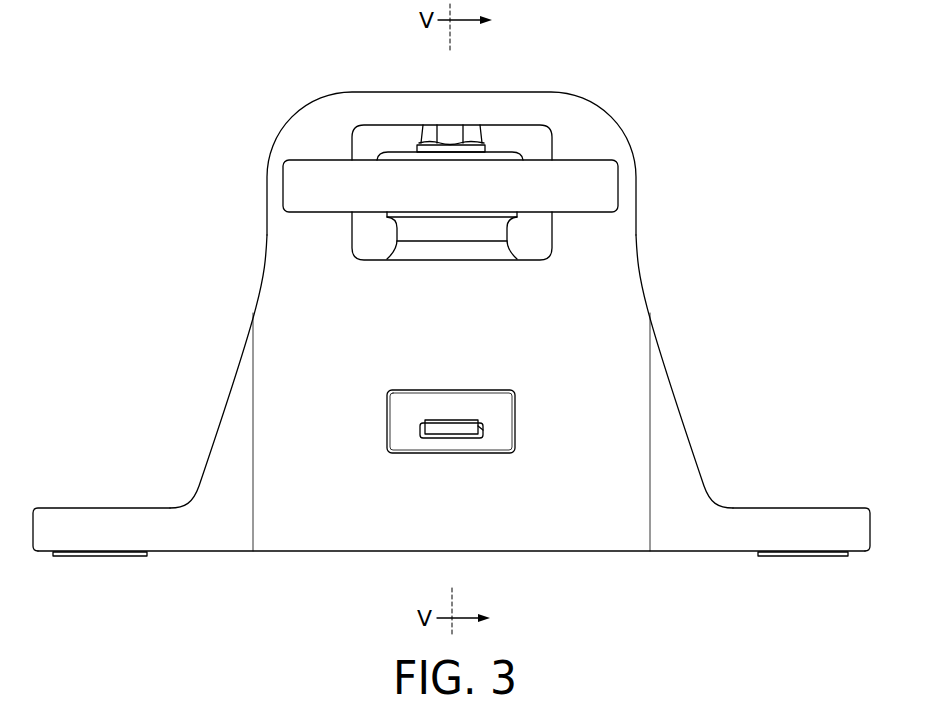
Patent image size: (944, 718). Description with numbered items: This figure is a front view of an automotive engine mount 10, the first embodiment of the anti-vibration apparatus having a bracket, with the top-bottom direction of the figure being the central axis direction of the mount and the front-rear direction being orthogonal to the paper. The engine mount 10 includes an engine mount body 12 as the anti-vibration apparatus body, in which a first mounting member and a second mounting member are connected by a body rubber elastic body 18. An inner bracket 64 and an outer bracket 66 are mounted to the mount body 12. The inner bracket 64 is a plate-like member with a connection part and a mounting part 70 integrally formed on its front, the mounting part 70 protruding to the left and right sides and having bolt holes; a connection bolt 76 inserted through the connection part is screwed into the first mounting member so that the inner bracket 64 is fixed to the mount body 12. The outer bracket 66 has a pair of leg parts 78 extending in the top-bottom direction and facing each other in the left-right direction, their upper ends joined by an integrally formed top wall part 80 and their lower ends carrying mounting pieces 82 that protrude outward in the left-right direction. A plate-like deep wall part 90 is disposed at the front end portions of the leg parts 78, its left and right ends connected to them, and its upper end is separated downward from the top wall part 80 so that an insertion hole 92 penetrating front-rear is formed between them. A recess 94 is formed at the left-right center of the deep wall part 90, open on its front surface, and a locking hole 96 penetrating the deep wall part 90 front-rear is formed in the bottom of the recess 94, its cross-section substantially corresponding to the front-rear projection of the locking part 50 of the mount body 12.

The engine mount 10 is at (683, 98).
The engine mount body 12 is at (537, 241).
The body rubber elastic body 18 is at (477, 249).
The locking part 50 is at (445, 403).
The inner bracket 64 is at (272, 190).
The outer bracket 66 is at (309, 94).
The mounting part 70 is at (325, 193).
The connection bolt 76 is at (431, 137).
The leg part 78 is at (271, 375).
The top wall part 80 is at (490, 108).
The mounting piece 82 is at (98, 530).
The deep wall part 90 is at (567, 508).
The insertion hole 92 is at (548, 140).
The recess 94 is at (388, 421).
The locking hole 96 is at (470, 430).